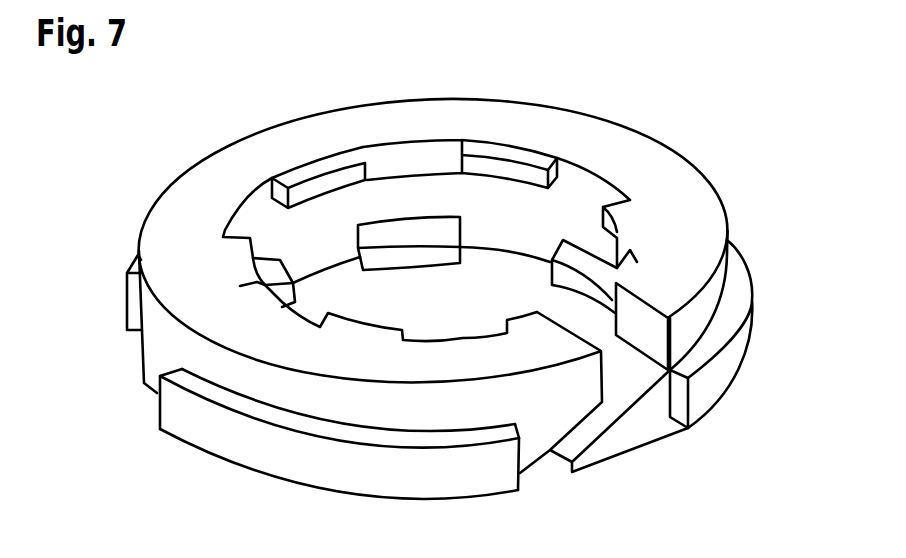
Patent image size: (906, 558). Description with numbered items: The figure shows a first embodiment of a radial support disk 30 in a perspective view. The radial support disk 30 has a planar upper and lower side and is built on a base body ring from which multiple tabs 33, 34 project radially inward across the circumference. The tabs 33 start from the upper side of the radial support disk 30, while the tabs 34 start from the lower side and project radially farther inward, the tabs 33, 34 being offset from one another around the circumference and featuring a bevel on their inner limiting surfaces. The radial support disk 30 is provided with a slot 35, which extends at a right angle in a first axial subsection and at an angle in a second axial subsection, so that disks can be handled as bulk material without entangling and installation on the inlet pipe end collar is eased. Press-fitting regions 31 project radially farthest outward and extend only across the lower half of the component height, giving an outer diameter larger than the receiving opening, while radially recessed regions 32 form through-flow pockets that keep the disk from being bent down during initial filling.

The radial support disk 30 is at (672, 98).
The press-fitting regions 31 is at (210, 435).
The radially recessed regions 32 is at (152, 356).
The tabs 33 is at (297, 176).
The tabs 34 is at (420, 232).
The slot 35 is at (625, 377).